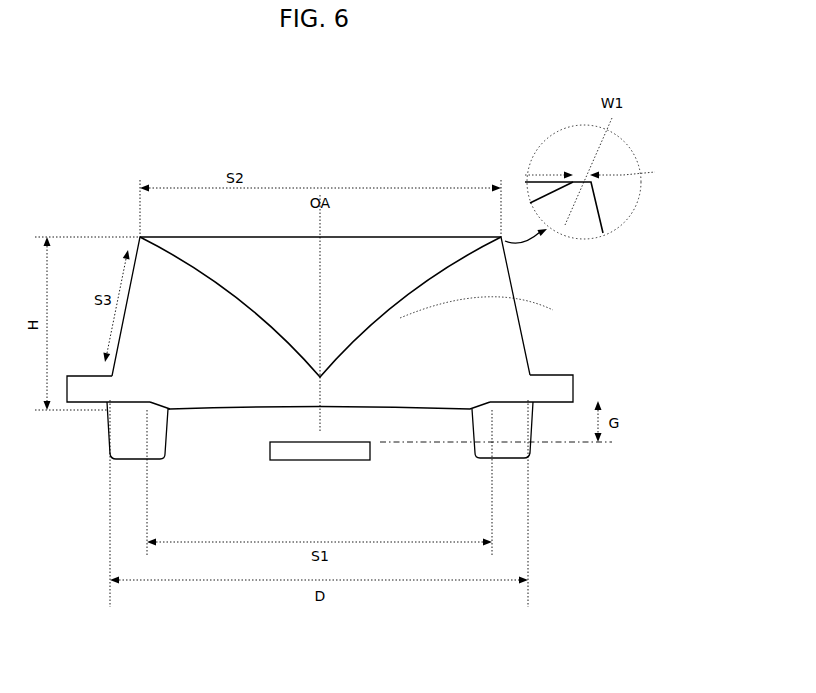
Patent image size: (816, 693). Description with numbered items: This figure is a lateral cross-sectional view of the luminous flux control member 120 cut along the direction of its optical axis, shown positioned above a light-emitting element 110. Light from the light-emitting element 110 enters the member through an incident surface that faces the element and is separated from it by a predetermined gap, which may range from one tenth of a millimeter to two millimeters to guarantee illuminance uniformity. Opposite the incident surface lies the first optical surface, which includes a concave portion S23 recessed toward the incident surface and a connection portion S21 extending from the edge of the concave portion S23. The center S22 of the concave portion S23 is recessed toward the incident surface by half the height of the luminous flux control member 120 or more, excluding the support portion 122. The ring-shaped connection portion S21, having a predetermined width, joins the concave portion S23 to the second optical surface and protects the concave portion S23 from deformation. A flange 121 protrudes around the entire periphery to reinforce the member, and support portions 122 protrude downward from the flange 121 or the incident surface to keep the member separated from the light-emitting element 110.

The light-emitting element 110 is at (340, 461).
The luminous flux control member 120 is at (490, 126).
The flange 121 is at (575, 378).
The support portions 122 is at (105, 418).
The connection portion S21 is at (605, 172).
The center of the concave portion S22 is at (312, 382).
The concave portion S23 is at (492, 308).